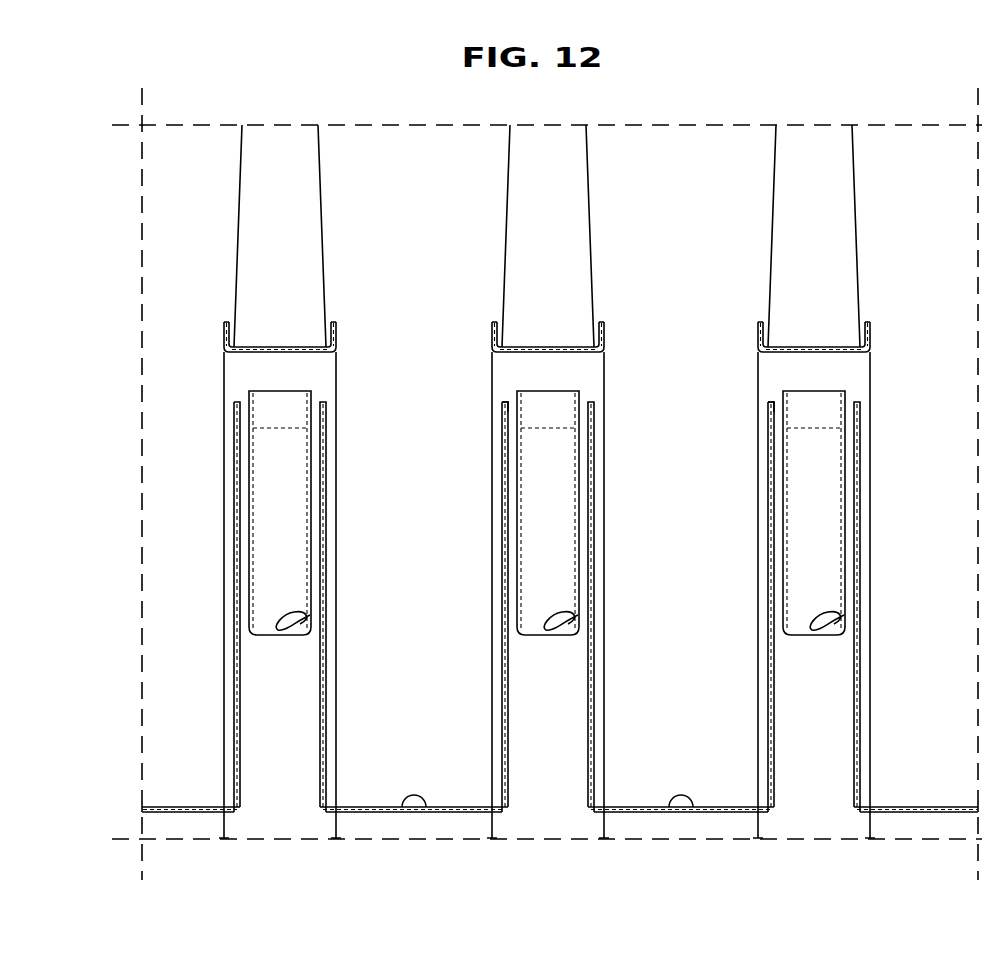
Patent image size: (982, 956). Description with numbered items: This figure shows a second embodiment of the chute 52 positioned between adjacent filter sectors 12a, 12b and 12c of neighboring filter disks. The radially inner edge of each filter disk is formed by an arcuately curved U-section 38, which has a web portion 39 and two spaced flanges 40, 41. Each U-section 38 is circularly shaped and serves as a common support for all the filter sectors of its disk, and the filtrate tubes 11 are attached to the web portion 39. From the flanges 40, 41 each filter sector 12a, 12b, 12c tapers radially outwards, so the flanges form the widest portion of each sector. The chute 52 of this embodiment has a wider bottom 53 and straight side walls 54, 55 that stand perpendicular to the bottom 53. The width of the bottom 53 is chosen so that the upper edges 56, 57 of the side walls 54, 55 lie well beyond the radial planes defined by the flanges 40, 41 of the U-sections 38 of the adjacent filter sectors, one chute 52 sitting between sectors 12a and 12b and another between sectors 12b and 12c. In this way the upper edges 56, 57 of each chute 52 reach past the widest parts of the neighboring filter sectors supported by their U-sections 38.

The filtrate tube 11 is at (278, 602).
The filter sector 12a is at (260, 226).
The filter sector 12b is at (528, 226).
The filter sector 12c is at (794, 226).
The U-section 38 is at (548, 306).
The web portion 39 is at (278, 358).
The flange 40 is at (225, 345).
The flange 41 is at (337, 330).
The chute 52 is at (330, 822).
The bottom 53 is at (422, 814).
The side wall 54 is at (310, 615).
The side wall 55 is at (502, 650).
The upper edge 56 is at (324, 402).
The upper edge 57 is at (502, 402).